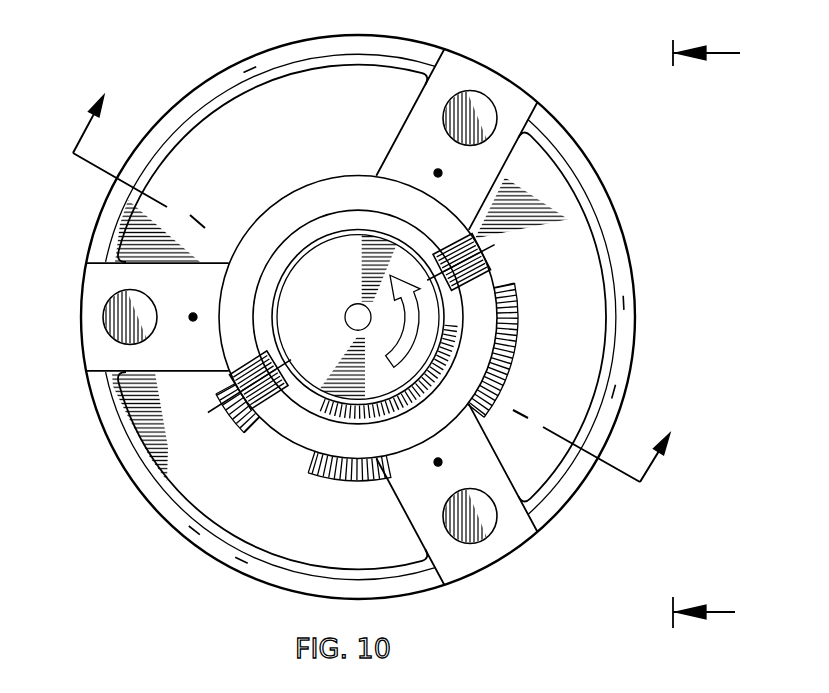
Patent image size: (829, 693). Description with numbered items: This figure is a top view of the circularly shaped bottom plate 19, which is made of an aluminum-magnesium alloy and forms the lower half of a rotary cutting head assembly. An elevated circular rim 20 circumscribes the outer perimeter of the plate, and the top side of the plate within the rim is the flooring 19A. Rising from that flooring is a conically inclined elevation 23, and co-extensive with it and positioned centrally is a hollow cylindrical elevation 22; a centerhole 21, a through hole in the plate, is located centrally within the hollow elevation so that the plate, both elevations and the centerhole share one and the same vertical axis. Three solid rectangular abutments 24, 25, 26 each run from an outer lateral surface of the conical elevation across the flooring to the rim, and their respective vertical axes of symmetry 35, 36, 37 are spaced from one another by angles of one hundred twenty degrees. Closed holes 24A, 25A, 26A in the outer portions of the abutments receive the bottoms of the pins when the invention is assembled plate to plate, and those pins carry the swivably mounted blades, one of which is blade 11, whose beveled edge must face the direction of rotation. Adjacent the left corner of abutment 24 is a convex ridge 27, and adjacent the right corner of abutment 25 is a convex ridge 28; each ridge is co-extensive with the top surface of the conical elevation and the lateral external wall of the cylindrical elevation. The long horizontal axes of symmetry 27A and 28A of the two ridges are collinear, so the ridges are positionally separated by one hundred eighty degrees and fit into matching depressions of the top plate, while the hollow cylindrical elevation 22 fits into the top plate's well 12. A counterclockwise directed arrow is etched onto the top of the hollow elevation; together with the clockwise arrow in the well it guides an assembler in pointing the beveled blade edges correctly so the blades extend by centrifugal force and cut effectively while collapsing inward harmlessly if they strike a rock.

The blade 11 is at (360, 298).
The well 12 is at (706, 347).
The bottom plate 19 is at (183, 99).
The flooring 19A is at (297, 108).
The elevated circular rim 20 is at (275, 58).
The centerhole 21 is at (352, 312).
The hollow cylindrical elevation 22 is at (327, 250).
The conically inclined elevation 23 is at (257, 205).
The solid rectangular abutment 24 is at (457, 68).
The closed hole 24A is at (487, 108).
The solid rectangular abutment 25 is at (103, 280).
The closed hole 25A is at (118, 328).
The solid rectangular abutment 26 is at (427, 512).
The closed hole 26A is at (487, 507).
The convex ridge 27 is at (497, 317).
The long horizontal axis of symmetry 27A is at (490, 242).
The convex ridge 28 is at (280, 400).
The long horizontal axis of symmetry 28A is at (213, 410).
The vertical axis of symmetry 35 is at (438, 170).
The vertical axis of symmetry 36 is at (193, 321).
The vertical axis of symmetry 37 is at (433, 465).